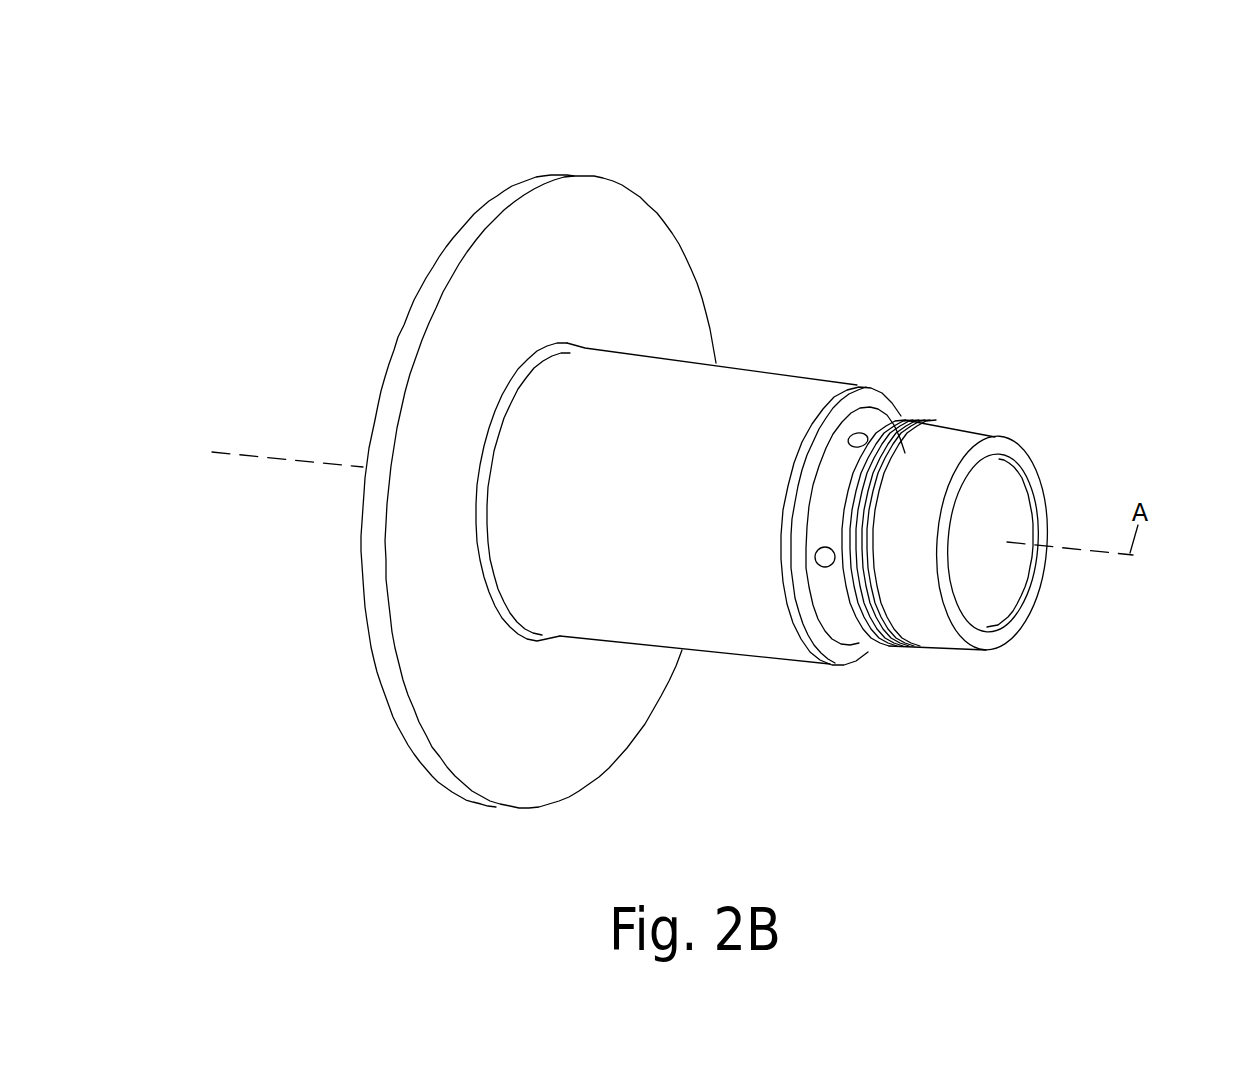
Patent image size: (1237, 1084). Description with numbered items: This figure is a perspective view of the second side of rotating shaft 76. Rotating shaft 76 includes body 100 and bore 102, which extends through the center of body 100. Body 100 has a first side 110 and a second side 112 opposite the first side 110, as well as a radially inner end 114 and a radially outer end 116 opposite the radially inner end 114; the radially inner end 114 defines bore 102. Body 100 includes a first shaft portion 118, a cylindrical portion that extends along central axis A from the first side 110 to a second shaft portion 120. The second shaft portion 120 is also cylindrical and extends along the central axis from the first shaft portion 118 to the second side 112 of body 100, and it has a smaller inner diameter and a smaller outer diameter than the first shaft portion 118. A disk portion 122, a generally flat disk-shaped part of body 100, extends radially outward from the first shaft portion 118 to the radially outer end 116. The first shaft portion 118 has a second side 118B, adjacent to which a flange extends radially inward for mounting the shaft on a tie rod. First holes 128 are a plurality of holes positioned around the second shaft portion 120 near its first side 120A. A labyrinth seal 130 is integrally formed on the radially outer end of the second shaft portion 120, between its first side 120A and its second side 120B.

The rotating shaft 76 is at (287, 233).
The body 100 is at (747, 393).
The bore 102 is at (1003, 508).
The first side 110 is at (352, 618).
The second side 112 is at (1047, 507).
The radially inner end 114 is at (984, 612).
The radially outer end 116 is at (532, 170).
The first shaft portion 118 is at (688, 595).
The second side of first shaft portion 118B is at (855, 387).
The second shaft portion 120 is at (953, 443).
The first side of second shaft portion 120A is at (817, 605).
The second side of second shaft portion 120B is at (973, 640).
The disk portion 122 is at (492, 300).
The first holes 128 is at (826, 568).
The labyrinth seal 130 is at (907, 423).